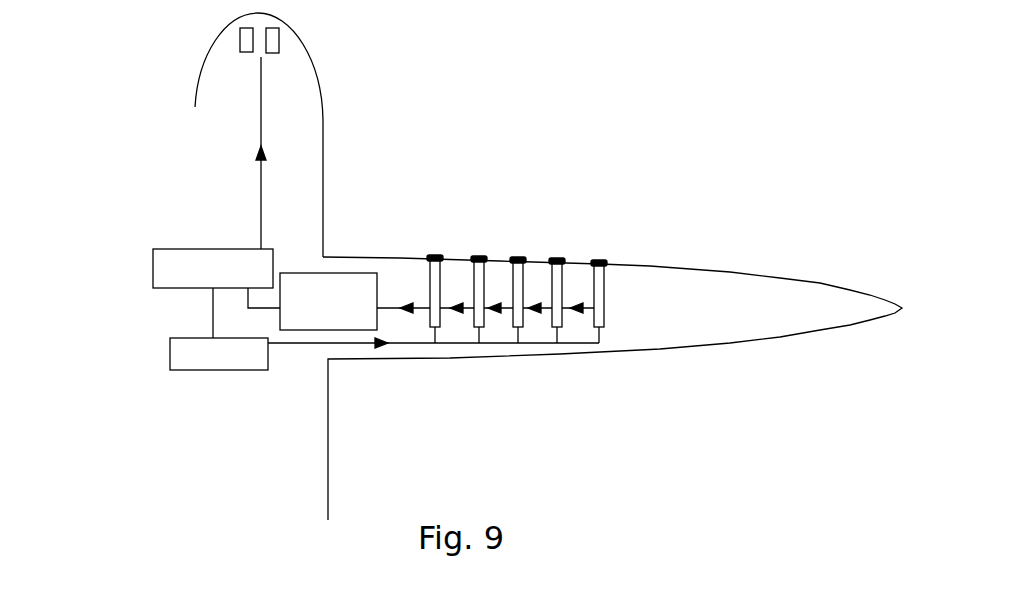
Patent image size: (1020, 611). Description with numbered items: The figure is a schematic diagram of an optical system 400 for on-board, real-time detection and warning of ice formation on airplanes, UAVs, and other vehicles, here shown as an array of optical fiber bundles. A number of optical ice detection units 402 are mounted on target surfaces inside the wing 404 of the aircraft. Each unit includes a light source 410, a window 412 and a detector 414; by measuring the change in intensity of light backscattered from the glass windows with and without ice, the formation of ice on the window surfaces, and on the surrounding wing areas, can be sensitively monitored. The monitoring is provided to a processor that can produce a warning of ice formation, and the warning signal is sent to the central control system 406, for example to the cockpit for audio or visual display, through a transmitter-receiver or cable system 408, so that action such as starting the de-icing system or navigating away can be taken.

The optical system 400 is at (183, 195).
The optical ice detection unit 402 is at (589, 284).
The wing 404 is at (730, 273).
The central control system 406 is at (279, 45).
The transmitter-receiver or cable system 408 is at (153, 262).
The light source 410 is at (170, 360).
The window 412 is at (426, 256).
The detector 414 is at (333, 257).